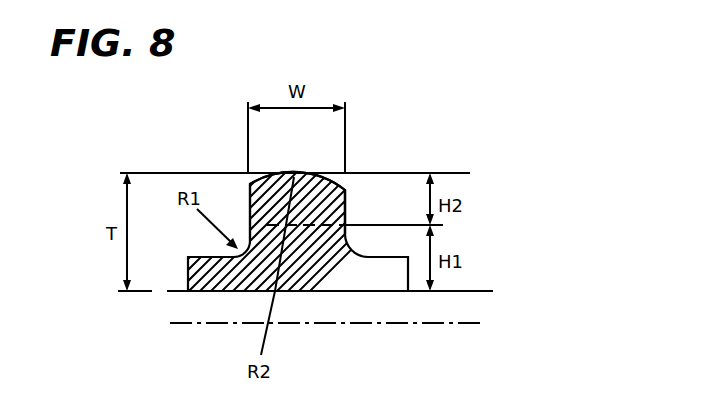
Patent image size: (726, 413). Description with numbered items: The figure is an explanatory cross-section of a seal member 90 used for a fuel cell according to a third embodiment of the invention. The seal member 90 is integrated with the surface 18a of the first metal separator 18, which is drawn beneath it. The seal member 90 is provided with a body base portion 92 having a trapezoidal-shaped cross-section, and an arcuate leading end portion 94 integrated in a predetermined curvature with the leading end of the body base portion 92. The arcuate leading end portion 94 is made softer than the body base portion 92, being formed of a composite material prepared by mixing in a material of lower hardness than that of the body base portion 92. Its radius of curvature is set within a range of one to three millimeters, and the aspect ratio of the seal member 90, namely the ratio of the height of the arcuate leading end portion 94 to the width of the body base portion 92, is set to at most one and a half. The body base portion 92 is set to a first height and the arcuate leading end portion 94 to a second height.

The seal member 90 is at (372, 150).
The body base portion 92 is at (303, 238).
The arcuate leading end portion 94 is at (345, 203).
The surface 18a is at (485, 290).
The first metal separator 18 is at (385, 305).